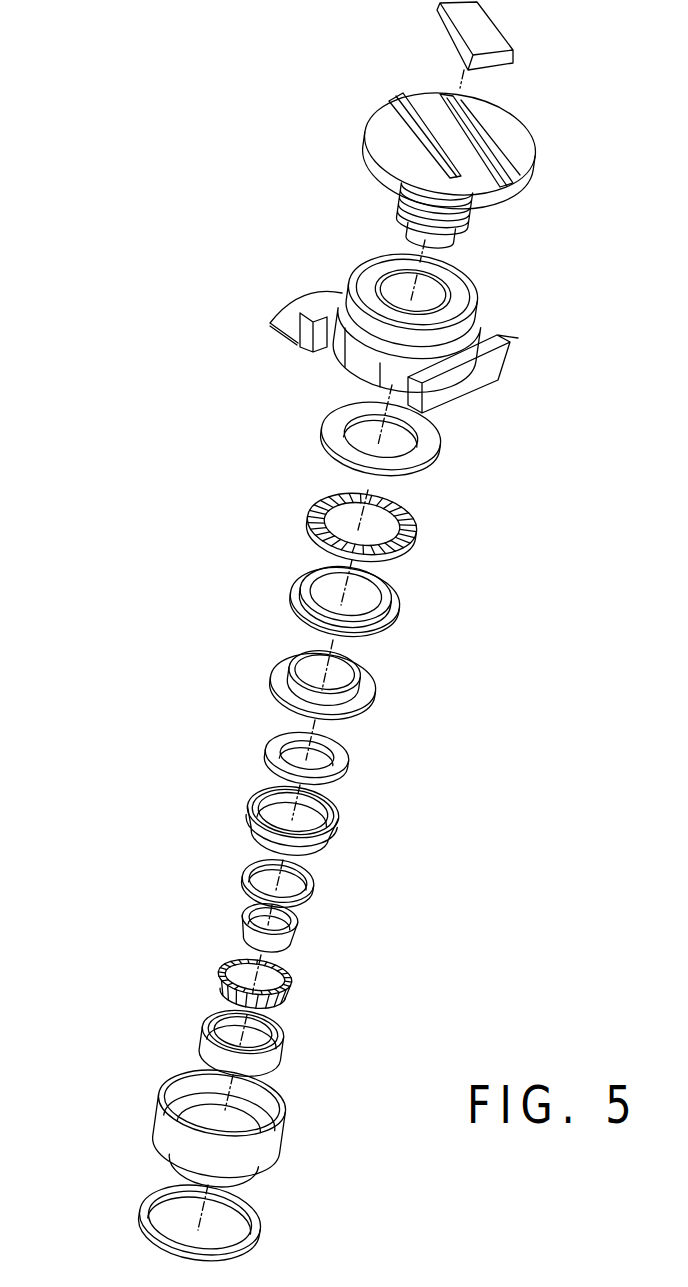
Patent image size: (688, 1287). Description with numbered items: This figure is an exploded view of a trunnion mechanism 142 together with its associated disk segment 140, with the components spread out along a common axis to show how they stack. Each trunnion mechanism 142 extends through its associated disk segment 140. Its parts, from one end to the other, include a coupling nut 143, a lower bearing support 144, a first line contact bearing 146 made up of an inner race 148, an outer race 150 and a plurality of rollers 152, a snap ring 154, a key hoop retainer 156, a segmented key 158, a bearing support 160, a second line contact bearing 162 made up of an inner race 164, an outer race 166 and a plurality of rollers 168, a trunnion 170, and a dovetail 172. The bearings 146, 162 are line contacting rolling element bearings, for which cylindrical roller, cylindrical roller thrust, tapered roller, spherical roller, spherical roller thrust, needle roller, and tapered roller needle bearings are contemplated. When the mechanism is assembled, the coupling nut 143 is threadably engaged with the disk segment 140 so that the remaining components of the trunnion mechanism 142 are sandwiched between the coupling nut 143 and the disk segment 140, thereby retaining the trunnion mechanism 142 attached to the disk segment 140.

The disk segment 140 is at (502, 347).
The trunnion mechanism 142 is at (150, 283).
The coupling nut 143 is at (150, 1194).
The lower bearing support 144 is at (168, 1110).
The first line contact bearing 146 is at (155, 943).
The inner race 148 is at (241, 916).
The outer race 150 is at (205, 1034).
The rollers 152 is at (222, 984).
The snap ring 154 is at (314, 884).
The key hoop retainer 156 is at (338, 821).
The segmented key 158 is at (345, 760).
The bearing support 160 is at (372, 691).
The second line contact bearing 162 is at (430, 517).
The inner race 164 is at (290, 598).
The outer race 166 is at (322, 432).
The rollers 168 is at (316, 506).
The trunnion 170 is at (532, 153).
The dovetail 172 is at (518, 57).